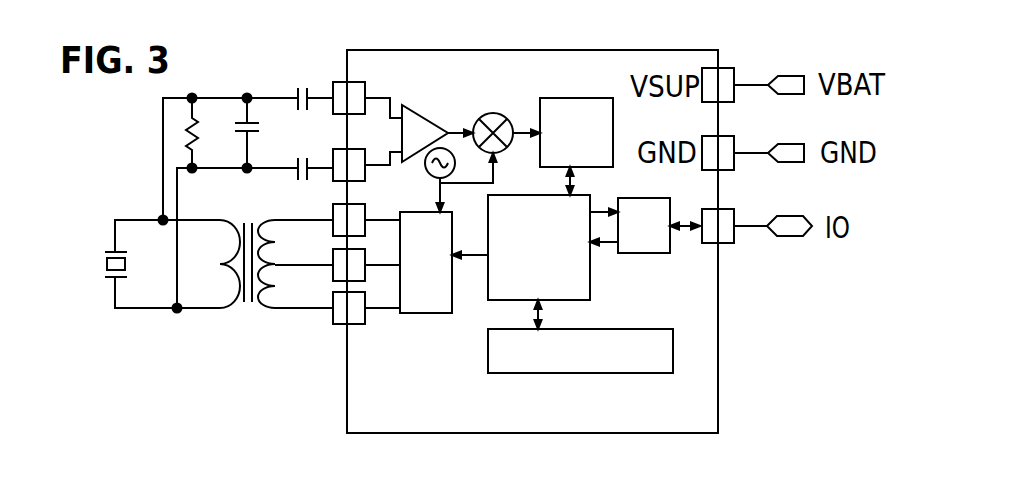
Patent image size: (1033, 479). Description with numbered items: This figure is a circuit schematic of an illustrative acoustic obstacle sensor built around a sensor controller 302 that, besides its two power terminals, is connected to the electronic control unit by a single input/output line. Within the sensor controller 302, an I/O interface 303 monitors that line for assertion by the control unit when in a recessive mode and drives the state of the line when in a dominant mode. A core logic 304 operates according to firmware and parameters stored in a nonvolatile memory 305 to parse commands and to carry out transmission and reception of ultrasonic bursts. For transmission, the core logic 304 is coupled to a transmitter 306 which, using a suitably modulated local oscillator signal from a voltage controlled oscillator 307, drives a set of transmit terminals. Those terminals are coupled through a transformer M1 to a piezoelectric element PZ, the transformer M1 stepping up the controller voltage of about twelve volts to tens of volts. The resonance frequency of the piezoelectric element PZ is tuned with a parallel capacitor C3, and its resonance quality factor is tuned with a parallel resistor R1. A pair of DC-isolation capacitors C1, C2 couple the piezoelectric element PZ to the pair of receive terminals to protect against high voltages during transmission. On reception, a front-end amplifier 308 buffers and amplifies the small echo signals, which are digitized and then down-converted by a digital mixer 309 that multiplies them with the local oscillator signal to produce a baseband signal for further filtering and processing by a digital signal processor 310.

The sensor controller 302 is at (663, 50).
The I/O interface 303 is at (655, 255).
The core logic 304 is at (593, 268).
The nonvolatile memory 305 is at (622, 373).
The transmitter 306 is at (412, 318).
The voltage controlled oscillator 307 is at (433, 176).
The front-end amplifier 308 is at (418, 104).
The digital mixer 309 is at (488, 113).
The digital signal processor 310 is at (563, 98).
The DC-isolation capacitor C1 is at (312, 150).
The DC-isolation capacitor C2 is at (312, 81).
The parallel capacitor C3 is at (260, 133).
The parallel resistor R1 is at (210, 133).
The transformer M1 is at (247, 282).
The piezoelectric element PZ is at (99, 273).